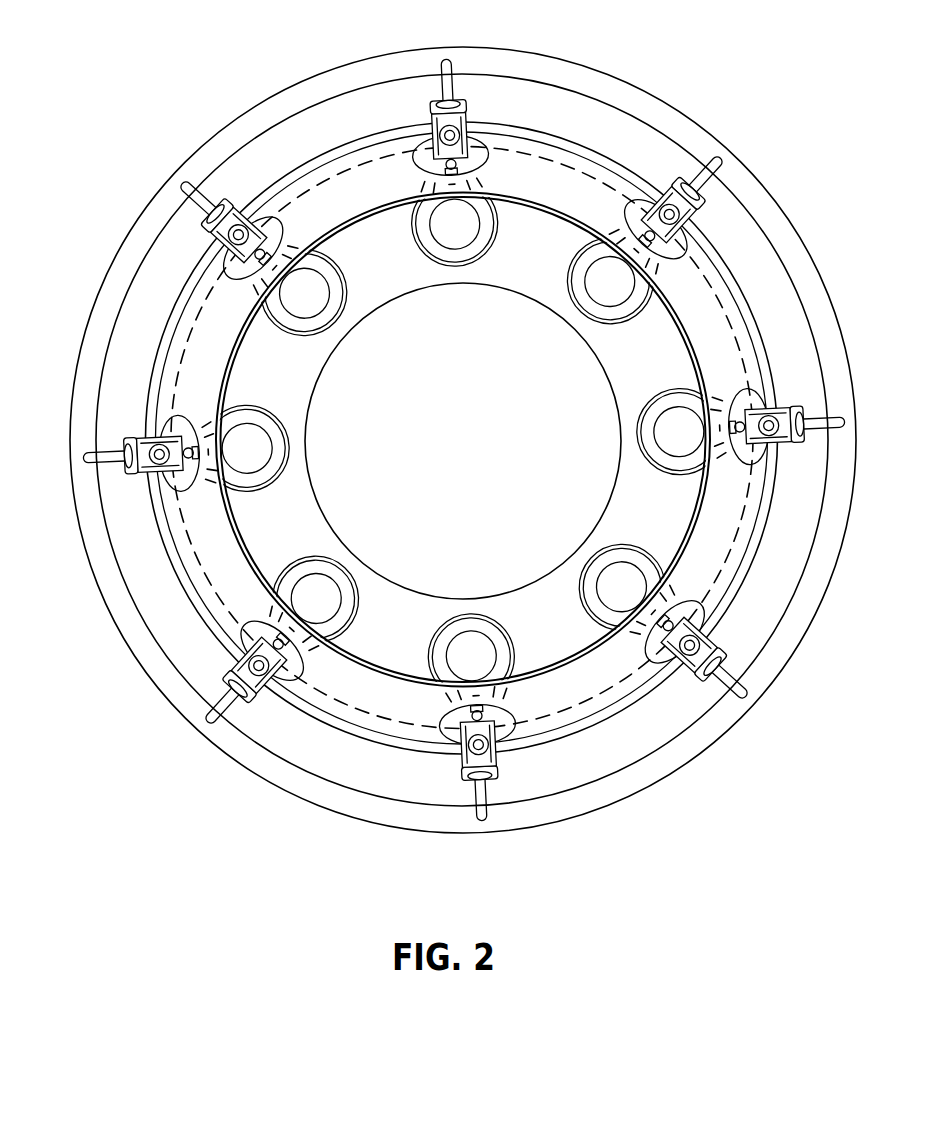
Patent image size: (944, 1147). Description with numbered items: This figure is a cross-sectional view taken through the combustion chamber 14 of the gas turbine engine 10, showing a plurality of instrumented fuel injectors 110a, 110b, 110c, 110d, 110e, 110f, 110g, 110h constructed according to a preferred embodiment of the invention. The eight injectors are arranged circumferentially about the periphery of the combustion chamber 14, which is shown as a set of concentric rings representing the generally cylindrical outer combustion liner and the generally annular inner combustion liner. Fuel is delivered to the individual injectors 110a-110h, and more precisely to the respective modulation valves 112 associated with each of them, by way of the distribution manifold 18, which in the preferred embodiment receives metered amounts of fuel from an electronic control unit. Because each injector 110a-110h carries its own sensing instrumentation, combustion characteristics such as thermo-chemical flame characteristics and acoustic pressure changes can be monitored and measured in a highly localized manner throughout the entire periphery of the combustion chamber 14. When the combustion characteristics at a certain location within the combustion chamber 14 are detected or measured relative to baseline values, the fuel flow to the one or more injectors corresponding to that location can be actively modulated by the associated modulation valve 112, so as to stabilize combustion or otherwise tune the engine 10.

The gas turbine engine 10 is at (113, 97).
The combustion chamber 14 is at (586, 178).
The distribution manifold 18 is at (113, 273).
The instrumented fuel injector 110a is at (468, 122).
The instrumented fuel injector 110b is at (713, 212).
The instrumented fuel injector 110c is at (773, 465).
The instrumented fuel injector 110d is at (690, 678).
The instrumented fuel injector 110e is at (457, 768).
The instrumented fuel injector 110f is at (247, 650).
The instrumented fuel injector 110g is at (135, 430).
The instrumented fuel injector 110h is at (247, 195).
The modulation valve 112 is at (440, 143).